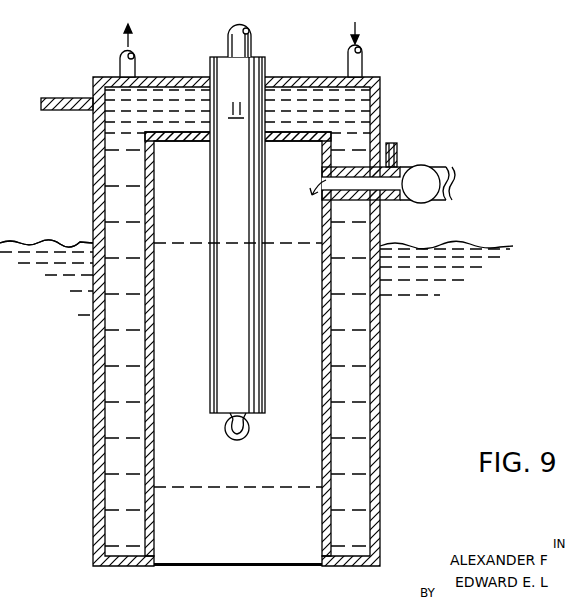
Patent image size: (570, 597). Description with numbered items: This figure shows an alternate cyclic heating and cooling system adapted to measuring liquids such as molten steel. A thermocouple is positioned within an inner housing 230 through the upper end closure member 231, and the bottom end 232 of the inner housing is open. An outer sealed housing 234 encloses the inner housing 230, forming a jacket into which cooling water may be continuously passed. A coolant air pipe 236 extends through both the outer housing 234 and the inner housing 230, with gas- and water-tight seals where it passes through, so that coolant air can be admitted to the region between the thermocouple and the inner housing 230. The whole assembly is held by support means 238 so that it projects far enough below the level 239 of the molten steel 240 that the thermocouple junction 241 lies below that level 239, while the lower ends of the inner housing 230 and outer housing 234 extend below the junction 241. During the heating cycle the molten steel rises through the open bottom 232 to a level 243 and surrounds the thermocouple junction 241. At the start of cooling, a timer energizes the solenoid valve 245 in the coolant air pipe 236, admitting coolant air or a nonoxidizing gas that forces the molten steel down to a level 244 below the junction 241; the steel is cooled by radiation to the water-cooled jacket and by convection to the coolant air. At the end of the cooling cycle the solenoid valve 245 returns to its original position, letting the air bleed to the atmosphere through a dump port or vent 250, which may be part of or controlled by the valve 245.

The inner housing 230 is at (155, 190).
The upper end closure member 231 is at (183, 141).
The bottom end 232 is at (238, 567).
The outer sealed housing 234 is at (98, 457).
The coolant air pipe 236 is at (360, 168).
The support means 238 is at (70, 97).
The level of the molten steel 239 is at (48, 243).
The molten steel 240 is at (62, 362).
The thermocouple junction 241 is at (245, 437).
The level 243 is at (305, 257).
The level 244 is at (268, 488).
The solenoid valve 245 is at (431, 200).
The dump port or vent 250 is at (398, 159).